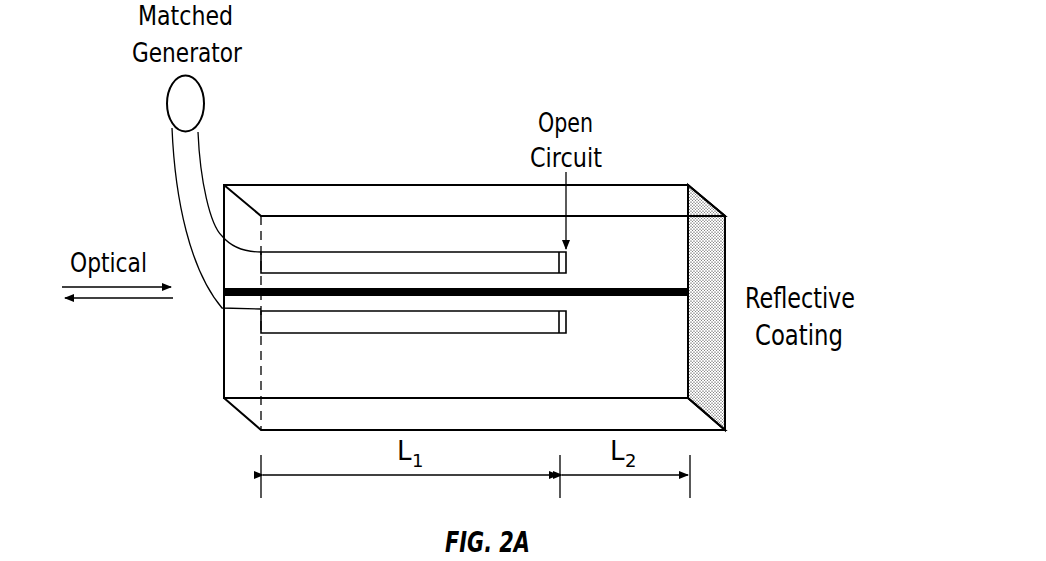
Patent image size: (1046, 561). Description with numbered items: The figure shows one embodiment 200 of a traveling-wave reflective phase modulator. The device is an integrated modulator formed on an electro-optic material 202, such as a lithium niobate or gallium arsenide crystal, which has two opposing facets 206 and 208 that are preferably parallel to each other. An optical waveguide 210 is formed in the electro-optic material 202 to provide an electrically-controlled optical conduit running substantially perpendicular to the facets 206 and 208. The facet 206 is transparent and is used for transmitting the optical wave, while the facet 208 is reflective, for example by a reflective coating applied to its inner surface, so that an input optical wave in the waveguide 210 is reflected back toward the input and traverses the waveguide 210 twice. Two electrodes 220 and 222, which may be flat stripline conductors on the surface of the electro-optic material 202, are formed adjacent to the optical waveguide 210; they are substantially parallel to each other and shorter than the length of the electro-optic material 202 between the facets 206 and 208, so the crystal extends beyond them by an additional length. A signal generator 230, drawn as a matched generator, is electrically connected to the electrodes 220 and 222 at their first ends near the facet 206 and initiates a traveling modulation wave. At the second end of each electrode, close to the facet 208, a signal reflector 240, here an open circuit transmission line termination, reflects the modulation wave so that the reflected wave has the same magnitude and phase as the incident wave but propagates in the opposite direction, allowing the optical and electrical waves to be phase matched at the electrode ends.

The traveling-wave reflective phase modulator 200 is at (711, 518).
The electro-optic material 202 is at (633, 183).
The facet 206 is at (223, 377).
The facet 208 is at (729, 368).
The optical waveguide 210 is at (614, 287).
The electrode 220 is at (408, 250).
The electrode 222 is at (410, 333).
The signal generator 230 is at (167, 100).
The signal reflector 240 is at (568, 250).